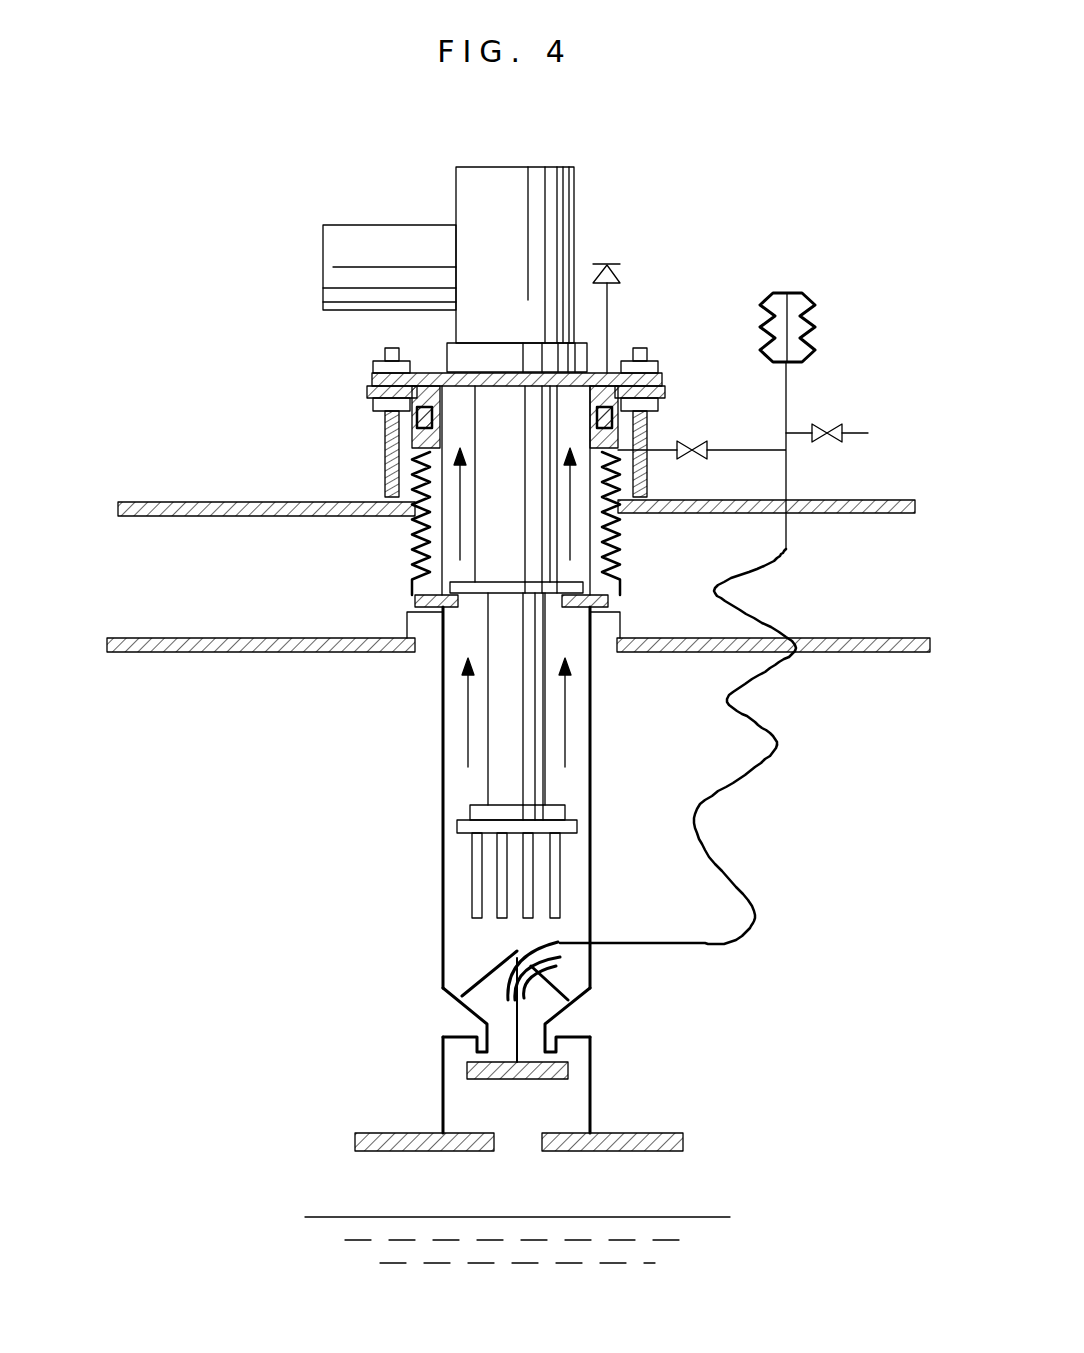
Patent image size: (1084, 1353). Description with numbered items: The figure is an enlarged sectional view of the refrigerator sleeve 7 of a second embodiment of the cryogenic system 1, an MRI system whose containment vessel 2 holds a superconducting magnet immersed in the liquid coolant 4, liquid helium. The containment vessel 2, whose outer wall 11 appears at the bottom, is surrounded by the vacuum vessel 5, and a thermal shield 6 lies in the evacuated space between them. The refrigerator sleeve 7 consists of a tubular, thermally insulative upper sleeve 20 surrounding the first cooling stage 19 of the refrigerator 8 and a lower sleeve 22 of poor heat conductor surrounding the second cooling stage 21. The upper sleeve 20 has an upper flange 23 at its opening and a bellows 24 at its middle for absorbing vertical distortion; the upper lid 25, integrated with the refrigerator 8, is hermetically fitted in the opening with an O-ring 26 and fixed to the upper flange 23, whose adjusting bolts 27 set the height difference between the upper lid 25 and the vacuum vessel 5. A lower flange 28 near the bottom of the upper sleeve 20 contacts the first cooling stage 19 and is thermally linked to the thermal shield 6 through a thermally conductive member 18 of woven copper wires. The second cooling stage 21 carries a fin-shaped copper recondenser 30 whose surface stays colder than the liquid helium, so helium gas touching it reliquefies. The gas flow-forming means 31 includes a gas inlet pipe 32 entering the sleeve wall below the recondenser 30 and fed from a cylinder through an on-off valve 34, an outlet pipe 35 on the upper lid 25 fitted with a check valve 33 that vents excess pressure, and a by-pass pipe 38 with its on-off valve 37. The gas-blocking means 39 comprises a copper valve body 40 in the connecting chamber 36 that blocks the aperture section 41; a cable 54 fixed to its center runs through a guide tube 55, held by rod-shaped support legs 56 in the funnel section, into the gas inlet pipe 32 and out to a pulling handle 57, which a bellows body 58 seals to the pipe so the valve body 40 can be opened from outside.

The cryogenic system 1 is at (195, 380).
The containment vessel 2 is at (684, 1140).
The liquid coolant 4 is at (680, 1217).
The vacuum vessel 5 is at (864, 500).
The thermal shield 6 is at (862, 637).
The refrigerator sleeve 7 is at (650, 737).
The refrigerator 8 is at (575, 178).
The outer wall 11 is at (380, 1152).
The thermally conductive member 18 is at (404, 625).
The first cooling stage 19 is at (503, 587).
The upper sleeve 20 is at (385, 470).
The second cooling stage 21 is at (471, 810).
The lower sleeve 22 is at (592, 808).
The upper flange 23 is at (367, 390).
The bellows 24 is at (414, 541).
The upper lid 25 is at (430, 371).
The O-ring 26 is at (657, 413).
The adjusting bolts 27 is at (655, 363).
The lower flange 28 is at (437, 644).
The recondenser 30 is at (472, 908).
The gas flow-forming means 31 is at (760, 706).
The gas inlet pipe 32 is at (753, 909).
The check valve 33 is at (613, 270).
The on-off valve 34 is at (820, 429).
The outlet pipe 35 is at (609, 320).
The connecting chamber 36 is at (594, 1092).
The on-off valve 37 is at (688, 438).
The by-pass pipe 38 is at (728, 450).
The gas-blocking means 39 is at (612, 1059).
The valve body 40 is at (467, 1070).
The aperture section 41 is at (483, 1053).
The cable 54 is at (523, 1039).
The guide tube 55 is at (560, 943).
The support legs 56 is at (482, 984).
The pulling handle 57 is at (787, 288).
The bellows body 58 is at (808, 300).